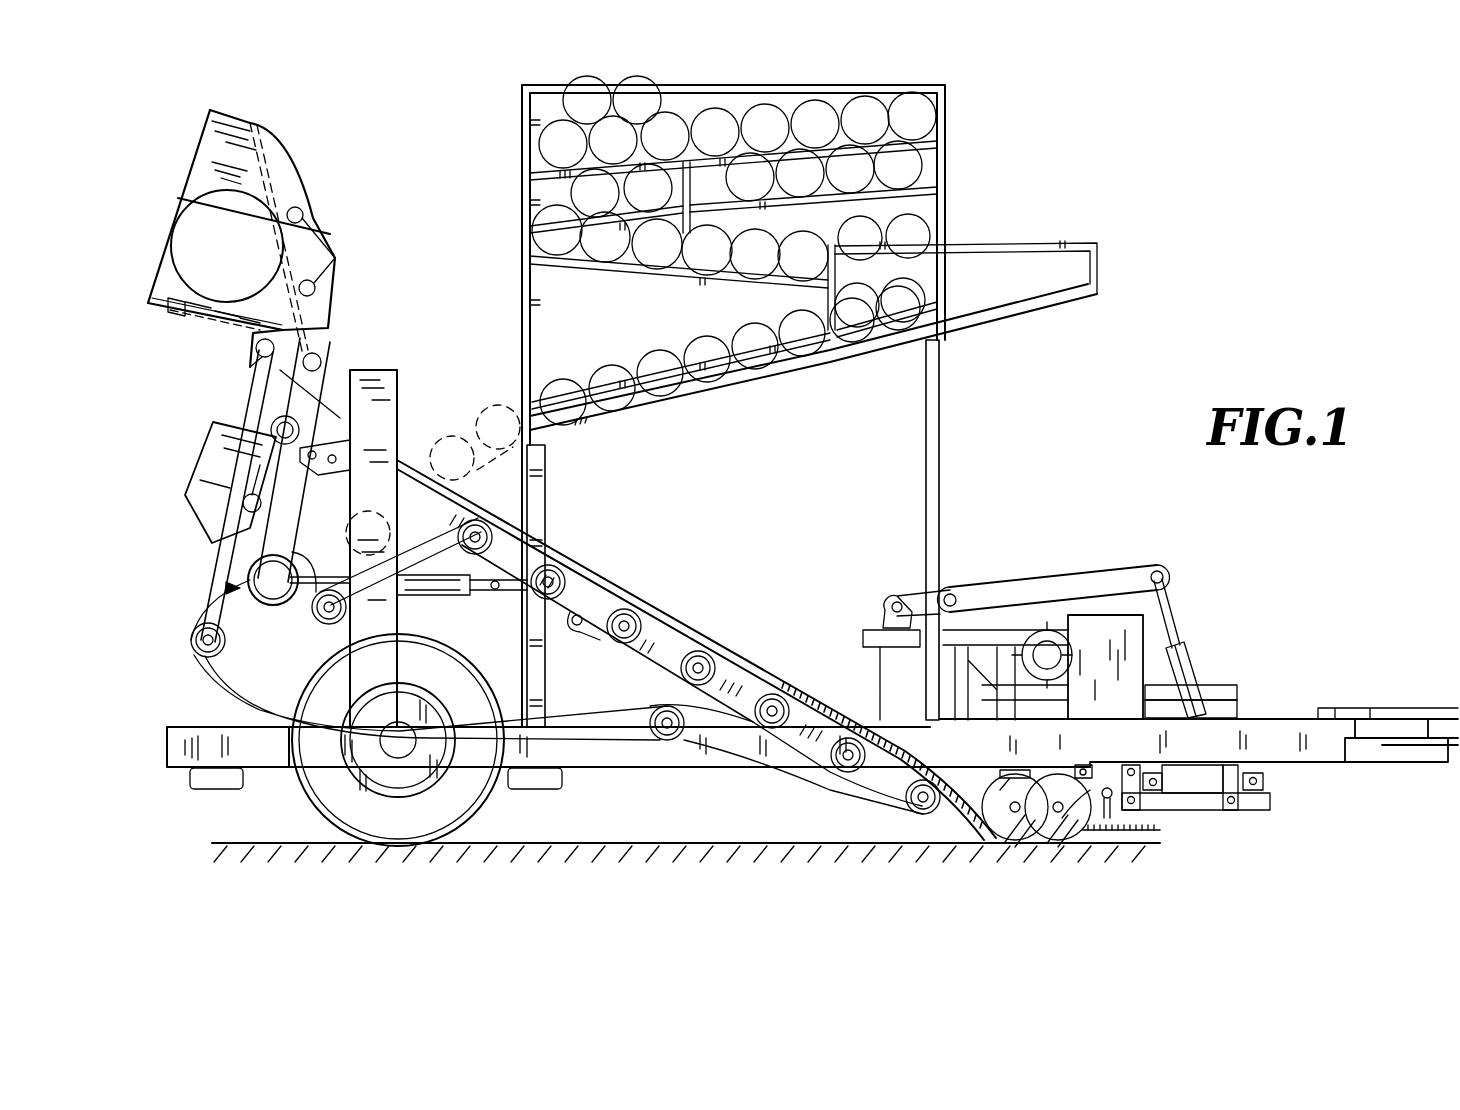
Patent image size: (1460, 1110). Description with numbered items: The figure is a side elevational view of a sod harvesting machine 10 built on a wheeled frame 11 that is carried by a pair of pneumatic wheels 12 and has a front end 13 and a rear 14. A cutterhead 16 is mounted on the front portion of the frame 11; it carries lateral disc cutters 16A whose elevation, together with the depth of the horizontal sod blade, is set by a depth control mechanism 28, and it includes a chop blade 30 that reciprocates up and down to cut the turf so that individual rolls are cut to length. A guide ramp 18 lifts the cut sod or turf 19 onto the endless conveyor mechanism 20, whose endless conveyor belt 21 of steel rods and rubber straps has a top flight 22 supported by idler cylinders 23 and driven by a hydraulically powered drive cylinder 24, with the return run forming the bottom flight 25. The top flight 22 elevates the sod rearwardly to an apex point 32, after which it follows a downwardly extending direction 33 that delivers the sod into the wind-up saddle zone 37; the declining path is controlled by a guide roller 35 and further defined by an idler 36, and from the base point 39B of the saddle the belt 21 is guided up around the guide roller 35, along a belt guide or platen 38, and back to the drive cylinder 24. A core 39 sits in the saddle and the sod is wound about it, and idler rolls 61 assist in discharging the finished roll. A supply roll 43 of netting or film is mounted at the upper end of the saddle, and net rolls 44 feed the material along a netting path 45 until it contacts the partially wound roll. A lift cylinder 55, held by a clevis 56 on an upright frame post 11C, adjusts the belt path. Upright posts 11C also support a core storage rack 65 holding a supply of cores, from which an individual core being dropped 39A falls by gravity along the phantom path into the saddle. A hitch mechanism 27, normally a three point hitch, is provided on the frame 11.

The sod harvesting machine 10 is at (995, 568).
The wheeled frame 11 is at (684, 760).
The upright frame post 11C is at (522, 298).
The pneumatic wheels 12 is at (325, 806).
The front end 13 is at (1282, 718).
The rear 14 is at (172, 732).
The cutterhead 16 is at (1075, 844).
The lateral disc cutters 16A is at (1028, 844).
The guide ramp 18 is at (965, 843).
The cut sod or turf 19 is at (804, 700).
The endless conveyor mechanism 20 is at (590, 630).
The endless conveyor belt 21 is at (598, 587).
The top flight 22 is at (662, 640).
The idler cylinders 23 is at (700, 662).
The drive cylinder 24 is at (272, 425).
The bottom flight 25 is at (563, 730).
The hitch mechanism 27 is at (1388, 708).
The depth control mechanism 28 is at (1187, 660).
The chop blade 30 is at (1130, 842).
The apex point 32 is at (478, 522).
The downwardly extending direction 33 is at (386, 522).
The guide roller 35 is at (306, 566).
The idler 36 is at (346, 604).
The wind-up saddle zone 37 is at (228, 588).
The belt guide or platen 38 is at (252, 487).
The core 39 is at (253, 575).
The individual core being dropped 39A is at (558, 386).
The base point of saddle 39B is at (196, 620).
The supply roll 43 is at (208, 235).
The net rolls 44 is at (256, 348).
The netting path 45 is at (323, 390).
The lift cylinder 55 is at (427, 590).
The clevis 56 is at (496, 590).
The idler rolls 61 is at (340, 258).
The core storage rack 65 is at (953, 210).